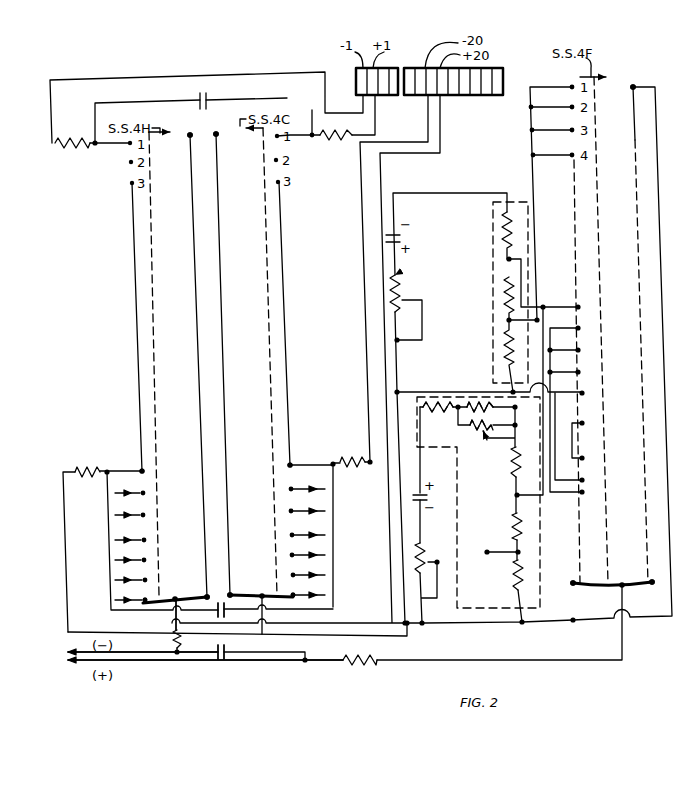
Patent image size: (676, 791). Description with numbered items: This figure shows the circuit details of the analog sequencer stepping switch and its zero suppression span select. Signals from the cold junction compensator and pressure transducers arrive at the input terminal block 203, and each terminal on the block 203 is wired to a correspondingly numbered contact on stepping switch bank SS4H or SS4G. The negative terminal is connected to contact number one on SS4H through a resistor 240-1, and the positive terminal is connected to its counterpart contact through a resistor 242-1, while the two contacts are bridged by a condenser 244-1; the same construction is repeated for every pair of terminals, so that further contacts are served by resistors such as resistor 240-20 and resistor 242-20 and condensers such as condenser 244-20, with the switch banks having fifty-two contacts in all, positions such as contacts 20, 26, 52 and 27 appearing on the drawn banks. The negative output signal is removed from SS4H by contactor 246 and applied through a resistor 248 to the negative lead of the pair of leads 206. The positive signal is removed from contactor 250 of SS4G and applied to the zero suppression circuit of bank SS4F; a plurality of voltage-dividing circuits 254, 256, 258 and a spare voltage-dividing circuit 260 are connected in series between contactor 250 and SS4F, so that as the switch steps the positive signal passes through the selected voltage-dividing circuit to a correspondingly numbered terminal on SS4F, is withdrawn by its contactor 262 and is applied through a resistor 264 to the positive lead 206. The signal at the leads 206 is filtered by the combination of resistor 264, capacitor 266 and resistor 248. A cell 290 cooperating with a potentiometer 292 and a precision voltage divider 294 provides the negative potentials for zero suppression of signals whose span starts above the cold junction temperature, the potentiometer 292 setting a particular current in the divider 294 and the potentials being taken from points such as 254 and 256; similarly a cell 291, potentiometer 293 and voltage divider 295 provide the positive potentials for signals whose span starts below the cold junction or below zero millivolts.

The input terminals 203 is at (404, 58).
The resistor 240-1 is at (80, 148).
The condenser 244-1 is at (208, 102).
The resistor 242-1 is at (336, 143).
The switch wiper contact 27 is at (403, 118).
The voltage divider 294 is at (490, 205).
The cell 290 is at (406, 242).
The potentiometer 292 is at (410, 298).
The voltage-dividing circuit 254 is at (510, 258).
The voltage-dividing circuit 256 is at (508, 322).
The resistor 240-20 is at (98, 469).
The resistor 242-20 is at (358, 458).
The switch contact 20 is at (216, 477).
The switch contact 26 is at (360, 594).
The switch contact 52 is at (422, 591).
The contactor 250 is at (274, 590).
The contactor 262 is at (622, 583).
The contactor 246 is at (170, 604).
The resistor 248 is at (185, 642).
The condenser 244-20 is at (224, 618).
The capacitor 266 is at (230, 658).
The resistor 264 is at (359, 666).
The pair of leads 206 is at (52, 665).
The potentiometer 293 is at (418, 560).
The cell 291 is at (433, 500).
The voltage-dividing circuit 258 is at (512, 500).
The spare voltage-dividing circuit 260 is at (510, 562).
The voltage divider 295 is at (506, 614).